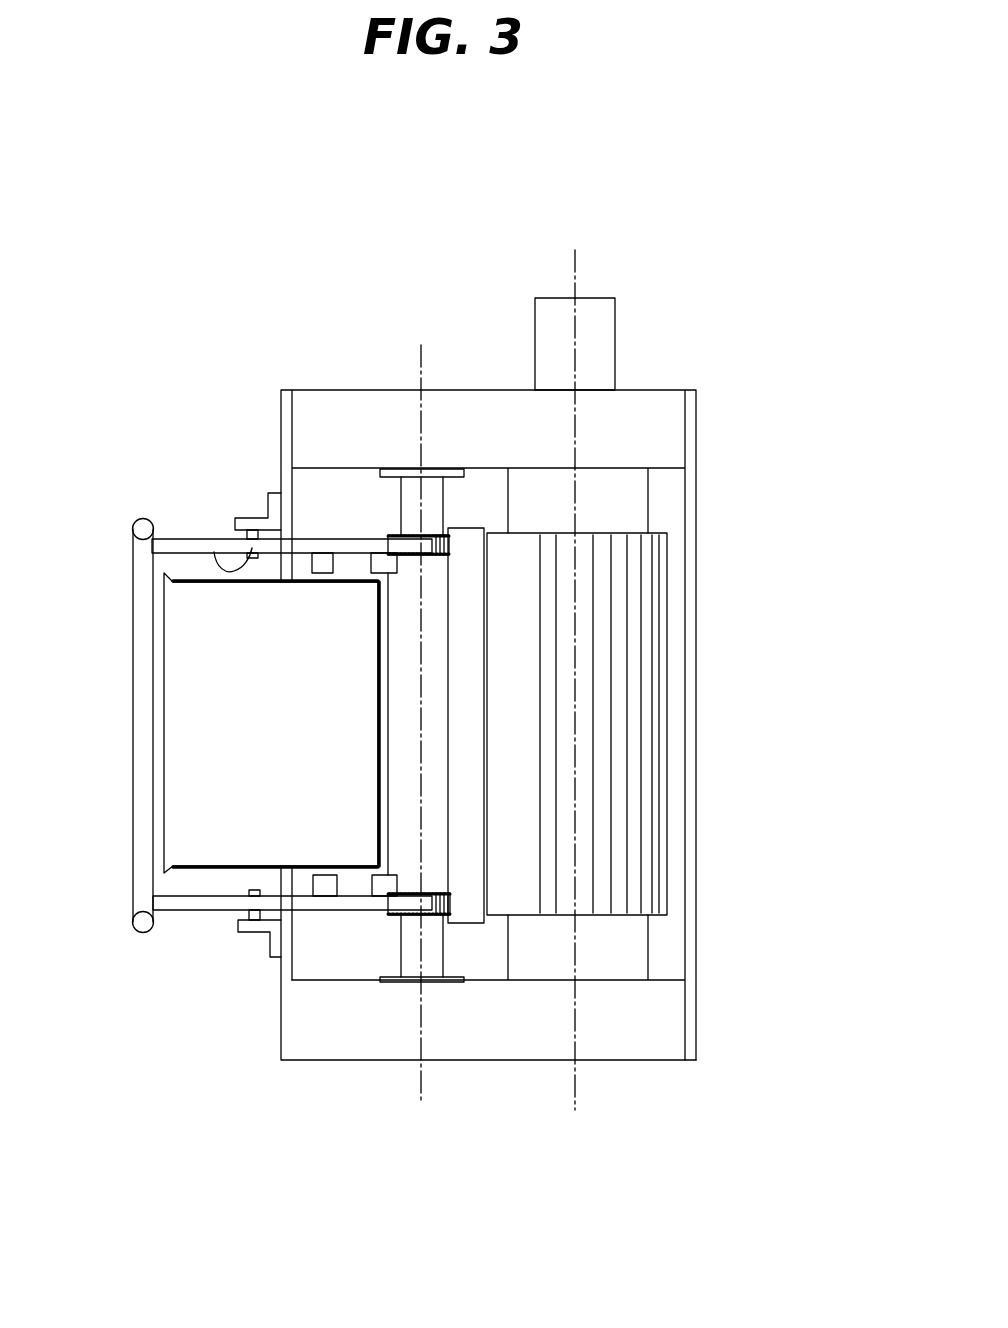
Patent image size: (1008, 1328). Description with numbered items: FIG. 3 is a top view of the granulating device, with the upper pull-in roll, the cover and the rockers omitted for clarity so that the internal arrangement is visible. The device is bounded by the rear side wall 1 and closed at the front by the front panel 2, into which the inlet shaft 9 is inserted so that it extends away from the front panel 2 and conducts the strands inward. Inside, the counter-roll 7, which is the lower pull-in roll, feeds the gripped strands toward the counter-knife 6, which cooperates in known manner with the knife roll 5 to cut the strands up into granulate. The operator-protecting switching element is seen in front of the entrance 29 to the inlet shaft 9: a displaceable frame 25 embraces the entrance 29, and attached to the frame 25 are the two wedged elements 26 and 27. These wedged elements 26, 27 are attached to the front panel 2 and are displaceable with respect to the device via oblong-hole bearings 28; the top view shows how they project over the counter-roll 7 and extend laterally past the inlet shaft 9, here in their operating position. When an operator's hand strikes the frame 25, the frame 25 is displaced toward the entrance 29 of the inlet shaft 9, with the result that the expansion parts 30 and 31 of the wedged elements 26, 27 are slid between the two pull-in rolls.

The rear side wall 1 is at (667, 423).
The front panel 2 is at (292, 996).
The knife roll 5 is at (617, 610).
The counter-knife 6 is at (470, 583).
The counter-roll 7 is at (407, 643).
The inlet shaft 9 is at (193, 642).
The frame 25 is at (145, 717).
The wedged element 26 is at (185, 903).
The wedged element 27 is at (183, 543).
The oblong-hole bearings 28 is at (215, 552).
The entrance 29 is at (165, 795).
The expansion part 30 is at (418, 903).
The expansion part 31 is at (420, 543).